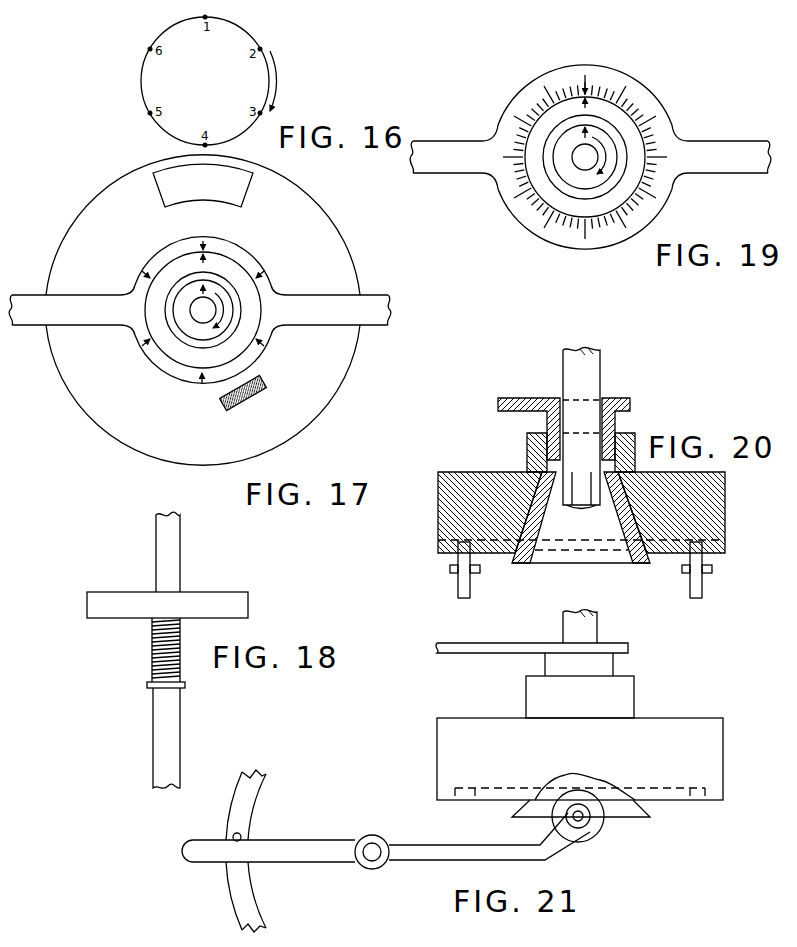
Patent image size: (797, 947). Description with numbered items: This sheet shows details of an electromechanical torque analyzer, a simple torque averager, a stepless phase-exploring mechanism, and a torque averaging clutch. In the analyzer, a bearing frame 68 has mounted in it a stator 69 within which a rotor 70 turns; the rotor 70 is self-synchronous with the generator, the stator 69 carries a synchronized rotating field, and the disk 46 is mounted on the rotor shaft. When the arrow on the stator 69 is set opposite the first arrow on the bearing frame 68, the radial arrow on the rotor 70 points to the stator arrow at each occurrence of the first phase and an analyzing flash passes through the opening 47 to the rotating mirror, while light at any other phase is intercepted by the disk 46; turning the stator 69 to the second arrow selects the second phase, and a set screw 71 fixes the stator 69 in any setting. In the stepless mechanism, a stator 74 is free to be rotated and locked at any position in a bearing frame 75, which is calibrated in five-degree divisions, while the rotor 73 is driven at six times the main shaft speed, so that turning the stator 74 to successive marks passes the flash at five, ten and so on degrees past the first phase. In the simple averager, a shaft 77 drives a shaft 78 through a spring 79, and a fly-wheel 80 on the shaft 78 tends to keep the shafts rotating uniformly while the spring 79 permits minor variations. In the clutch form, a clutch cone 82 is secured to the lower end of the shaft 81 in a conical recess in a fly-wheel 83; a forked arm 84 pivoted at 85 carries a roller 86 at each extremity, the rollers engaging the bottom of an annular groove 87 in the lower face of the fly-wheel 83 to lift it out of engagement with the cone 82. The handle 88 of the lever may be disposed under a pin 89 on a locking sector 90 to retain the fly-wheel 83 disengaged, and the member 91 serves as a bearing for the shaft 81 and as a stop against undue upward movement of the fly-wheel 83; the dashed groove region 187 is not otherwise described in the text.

In FIG. 17, the disk 46 is at (356, 338).
In FIG. 17, the opening 47 is at (237, 196).
In FIG. 17, the bearing frame 68 is at (360, 308).
In FIG. 17, the stator 69 is at (250, 298).
In FIG. 17, the rotor 70 is at (199, 326).
In FIG. 17, the set screw 71 is at (248, 396).
In FIG. 19, the rotor 73 is at (576, 177).
In FIG. 19, the stator 74 is at (607, 214).
In FIG. 19, the bearing frame 75 is at (525, 218).
In FIG. 18, the shaft 77 is at (172, 757).
In FIG. 18, the shaft 78 is at (172, 556).
In FIG. 18, the spring 79 is at (152, 651).
In FIG. 18, the fly-wheel 80 is at (200, 600).
In FIG. 20, the shaft 81 is at (592, 372).
In FIG. 21, the shaft 81 is at (592, 629).
In FIG. 20, the clutch cone 82 is at (633, 562).
In FIG. 21, the clutch cone 82 is at (640, 810).
In FIG. 20, the fly-wheel 83 is at (725, 518).
In FIG. 21, the fly-wheel 83 is at (714, 766).
In FIG. 21, the forked arm 84 is at (426, 848).
In FIG. 21, the pivot 85 is at (375, 862).
In FIG. 20, the roller 86 is at (470, 589).
In FIG. 21, the roller 86 is at (586, 836).
In FIG. 20, the annular groove 87 is at (725, 546).
In FIG. 21, the handle 88 is at (272, 848).
In FIG. 21, the pin 89 is at (241, 836).
In FIG. 21, the locking sector 90 is at (256, 798).
In FIG. 20, the member 91 is at (618, 420).
In FIG. 21, the member 91 is at (613, 667).
In FIG. 21, the slot 187 is at (698, 805).